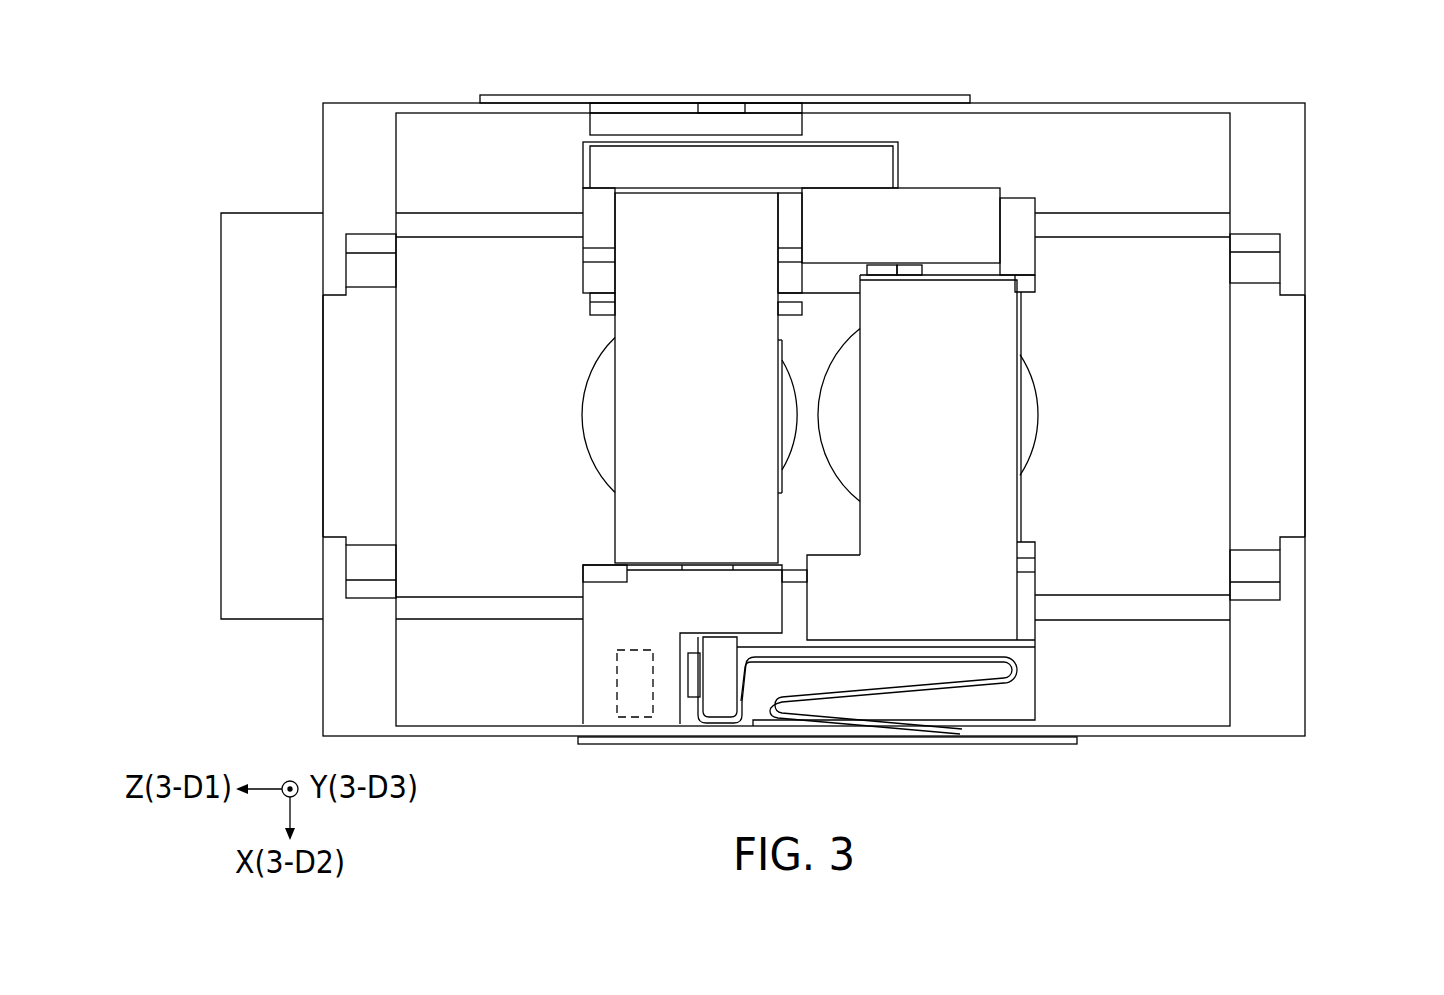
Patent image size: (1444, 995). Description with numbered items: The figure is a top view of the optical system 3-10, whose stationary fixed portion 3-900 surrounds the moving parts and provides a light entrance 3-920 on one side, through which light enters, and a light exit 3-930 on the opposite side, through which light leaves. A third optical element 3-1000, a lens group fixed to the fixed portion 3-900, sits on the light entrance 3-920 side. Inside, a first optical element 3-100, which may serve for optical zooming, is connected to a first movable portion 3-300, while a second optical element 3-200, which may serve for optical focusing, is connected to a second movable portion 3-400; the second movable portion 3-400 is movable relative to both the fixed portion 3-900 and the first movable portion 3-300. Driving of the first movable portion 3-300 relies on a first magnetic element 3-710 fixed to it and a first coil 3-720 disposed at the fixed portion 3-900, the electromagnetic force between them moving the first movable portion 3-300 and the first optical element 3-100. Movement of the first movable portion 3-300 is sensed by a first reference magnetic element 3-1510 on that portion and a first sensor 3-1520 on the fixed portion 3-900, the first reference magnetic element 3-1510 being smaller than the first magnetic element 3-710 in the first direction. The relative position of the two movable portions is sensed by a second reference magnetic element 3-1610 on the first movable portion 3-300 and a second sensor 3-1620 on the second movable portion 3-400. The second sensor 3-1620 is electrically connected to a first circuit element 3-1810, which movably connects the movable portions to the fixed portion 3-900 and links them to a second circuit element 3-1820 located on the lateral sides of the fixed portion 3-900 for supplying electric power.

The optical system 3-10 is at (197, 66).
The fixed portion 3-900 is at (343, 157).
The light entrance 3-920 is at (322, 437).
The light exit 3-930 is at (1306, 416).
The third optical element 3-1000 is at (270, 233).
The first optical element 3-100 is at (638, 418).
The second optical element 3-200 is at (995, 417).
The first movable portion 3-300 is at (595, 279).
The second movable portion 3-400 is at (1027, 260).
The first magnetic element 3-710 is at (862, 140).
The first coil 3-720 is at (770, 120).
The first reference magnetic element 3-1510 is at (630, 165).
The first sensor 3-1520 is at (720, 105).
The second reference magnetic element 3-1610 is at (615, 697).
The second sensor 3-1620 is at (700, 690).
The first circuit element 3-1810 is at (820, 697).
The second circuit element 3-1820 is at (930, 100).